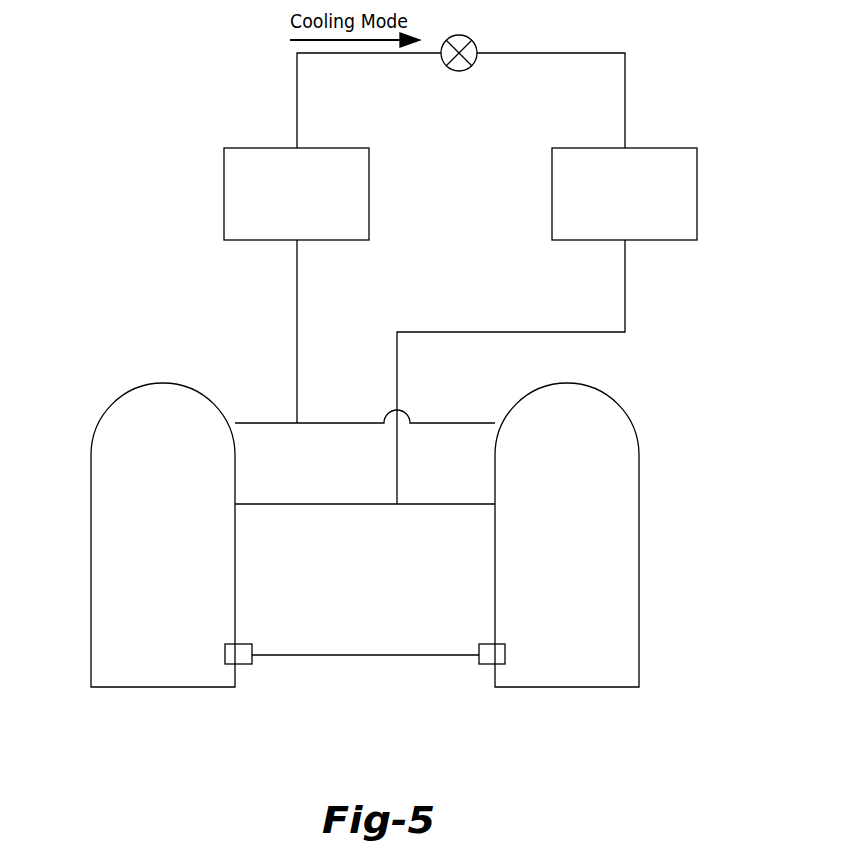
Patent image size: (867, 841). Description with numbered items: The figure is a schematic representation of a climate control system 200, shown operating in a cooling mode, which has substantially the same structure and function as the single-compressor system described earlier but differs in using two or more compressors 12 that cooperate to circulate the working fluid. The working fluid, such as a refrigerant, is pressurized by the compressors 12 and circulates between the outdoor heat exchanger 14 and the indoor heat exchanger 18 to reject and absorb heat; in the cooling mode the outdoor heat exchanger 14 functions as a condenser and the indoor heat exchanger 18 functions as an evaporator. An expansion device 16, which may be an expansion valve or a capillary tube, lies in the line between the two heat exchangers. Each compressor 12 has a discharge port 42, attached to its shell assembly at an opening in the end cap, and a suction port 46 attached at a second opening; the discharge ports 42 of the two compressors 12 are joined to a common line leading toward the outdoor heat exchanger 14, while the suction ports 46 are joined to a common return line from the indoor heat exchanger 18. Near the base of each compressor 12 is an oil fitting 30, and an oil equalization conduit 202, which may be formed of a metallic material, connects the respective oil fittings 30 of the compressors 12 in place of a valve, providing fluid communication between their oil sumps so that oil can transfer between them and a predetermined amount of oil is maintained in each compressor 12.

The system 200 is at (206, 132).
The expansion device 16 is at (467, 36).
The outdoor heat exchanger 14 is at (224, 194).
The indoor heat exchanger 18 is at (697, 195).
The discharge port 42 is at (235, 423).
The suction port 46 is at (235, 504).
The compressor 12 is at (93, 544).
The oil fitting 30 is at (245, 644).
The oil equalization conduit 202 is at (365, 655).